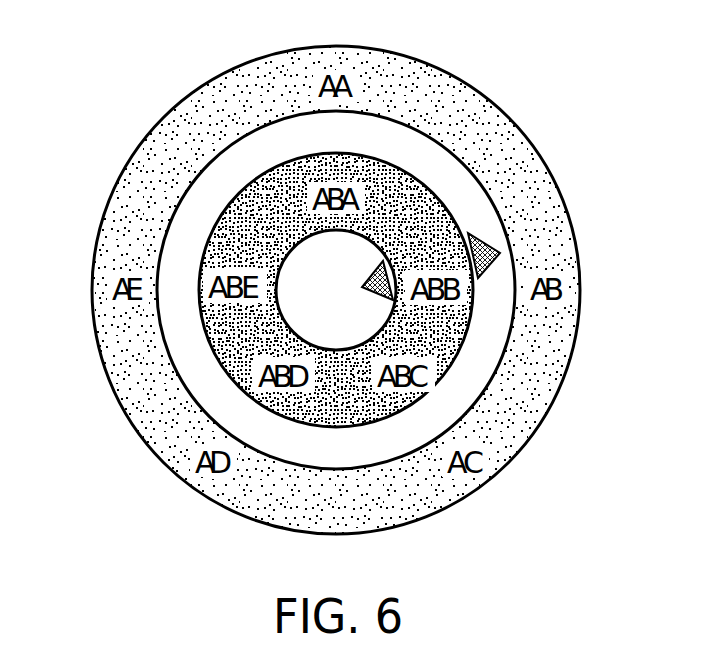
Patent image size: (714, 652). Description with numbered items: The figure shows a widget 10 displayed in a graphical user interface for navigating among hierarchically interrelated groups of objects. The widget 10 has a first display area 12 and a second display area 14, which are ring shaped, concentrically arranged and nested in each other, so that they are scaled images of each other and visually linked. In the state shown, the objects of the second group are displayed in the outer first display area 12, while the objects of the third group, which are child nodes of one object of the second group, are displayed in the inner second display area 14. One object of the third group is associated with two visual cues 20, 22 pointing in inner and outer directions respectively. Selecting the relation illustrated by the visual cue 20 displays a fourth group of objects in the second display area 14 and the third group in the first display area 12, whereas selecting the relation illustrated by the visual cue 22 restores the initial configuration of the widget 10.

The widget 10 is at (112, 80).
The first display area 12 is at (250, 61).
The second display area 14 is at (207, 340).
The visual cue 20 is at (372, 293).
The visual cue 22 is at (493, 240).